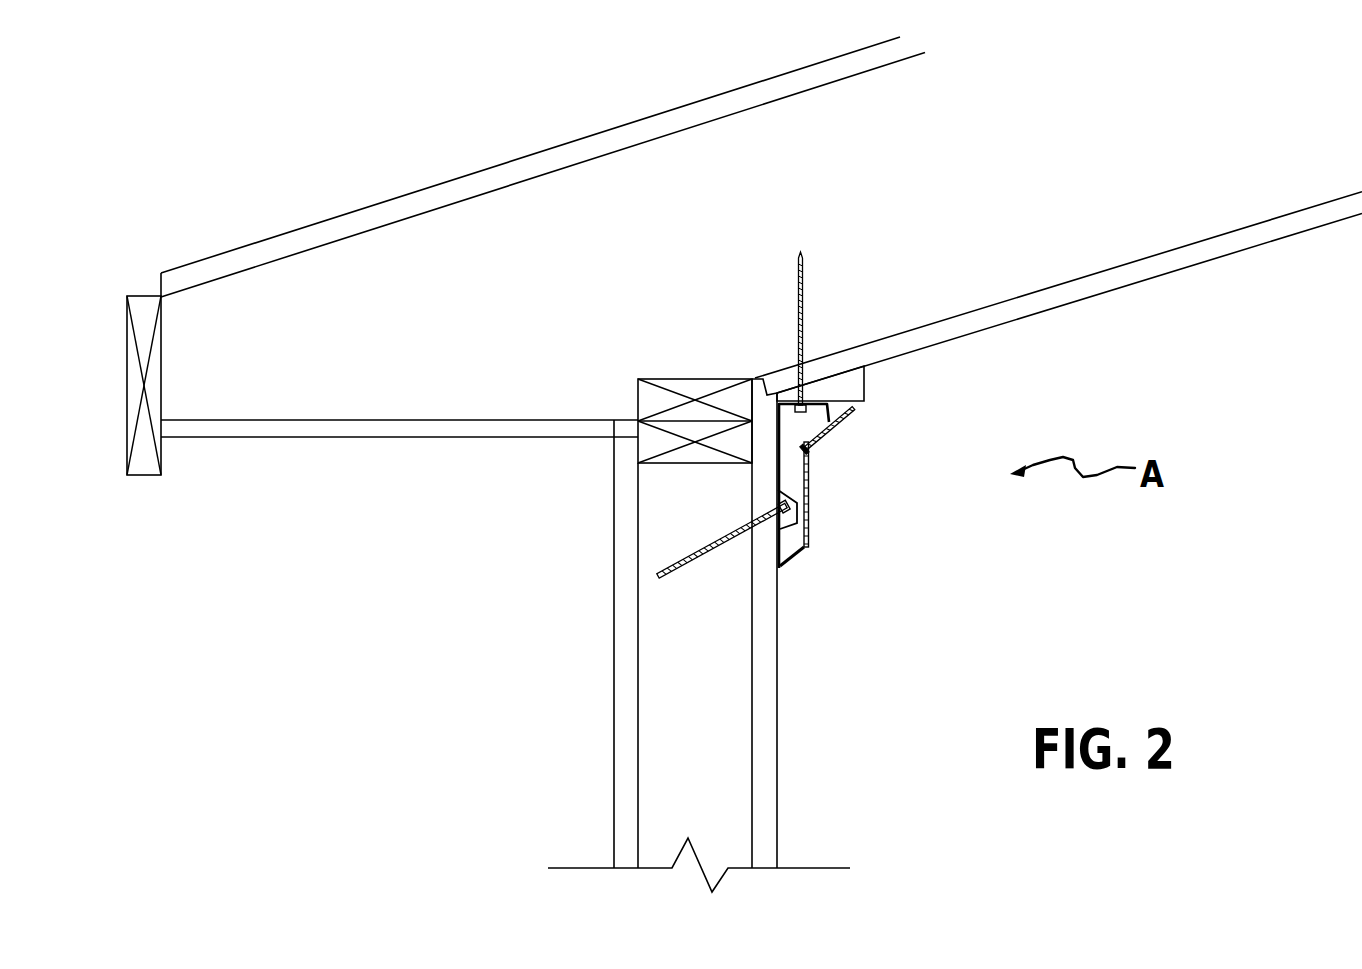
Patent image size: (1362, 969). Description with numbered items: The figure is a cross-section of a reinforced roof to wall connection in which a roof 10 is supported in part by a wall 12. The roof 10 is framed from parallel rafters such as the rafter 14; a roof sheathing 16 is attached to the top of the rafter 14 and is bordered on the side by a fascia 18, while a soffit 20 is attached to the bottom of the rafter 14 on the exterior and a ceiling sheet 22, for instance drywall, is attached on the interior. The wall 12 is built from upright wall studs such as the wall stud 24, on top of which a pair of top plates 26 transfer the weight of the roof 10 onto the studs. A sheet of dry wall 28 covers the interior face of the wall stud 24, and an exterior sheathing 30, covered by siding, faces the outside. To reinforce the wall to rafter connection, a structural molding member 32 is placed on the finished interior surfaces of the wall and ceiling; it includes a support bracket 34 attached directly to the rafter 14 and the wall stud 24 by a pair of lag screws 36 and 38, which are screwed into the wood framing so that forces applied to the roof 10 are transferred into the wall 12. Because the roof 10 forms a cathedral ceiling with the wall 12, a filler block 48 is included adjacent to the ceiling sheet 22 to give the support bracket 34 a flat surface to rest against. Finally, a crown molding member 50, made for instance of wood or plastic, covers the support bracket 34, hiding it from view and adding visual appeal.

The roof 10 is at (484, 278).
The wall 12 is at (699, 590).
The rafter 14 is at (1058, 285).
The roof sheathing 16 is at (543, 167).
The fascia 18 is at (102, 385).
The soffit 20 is at (399, 469).
The ceiling sheet 22 is at (1057, 304).
The wall stud 24 is at (813, 623).
The top plates 26 is at (665, 375).
The dry wall 28 is at (830, 630).
The exterior sheathing 30 is at (571, 644).
The structural molding member 32 is at (863, 519).
The support bracket 34 is at (845, 494).
The lag screw 36 is at (857, 316).
The lag screw 38 is at (722, 569).
The filler block 48 is at (887, 388).
The crown molding member 50 is at (882, 429).